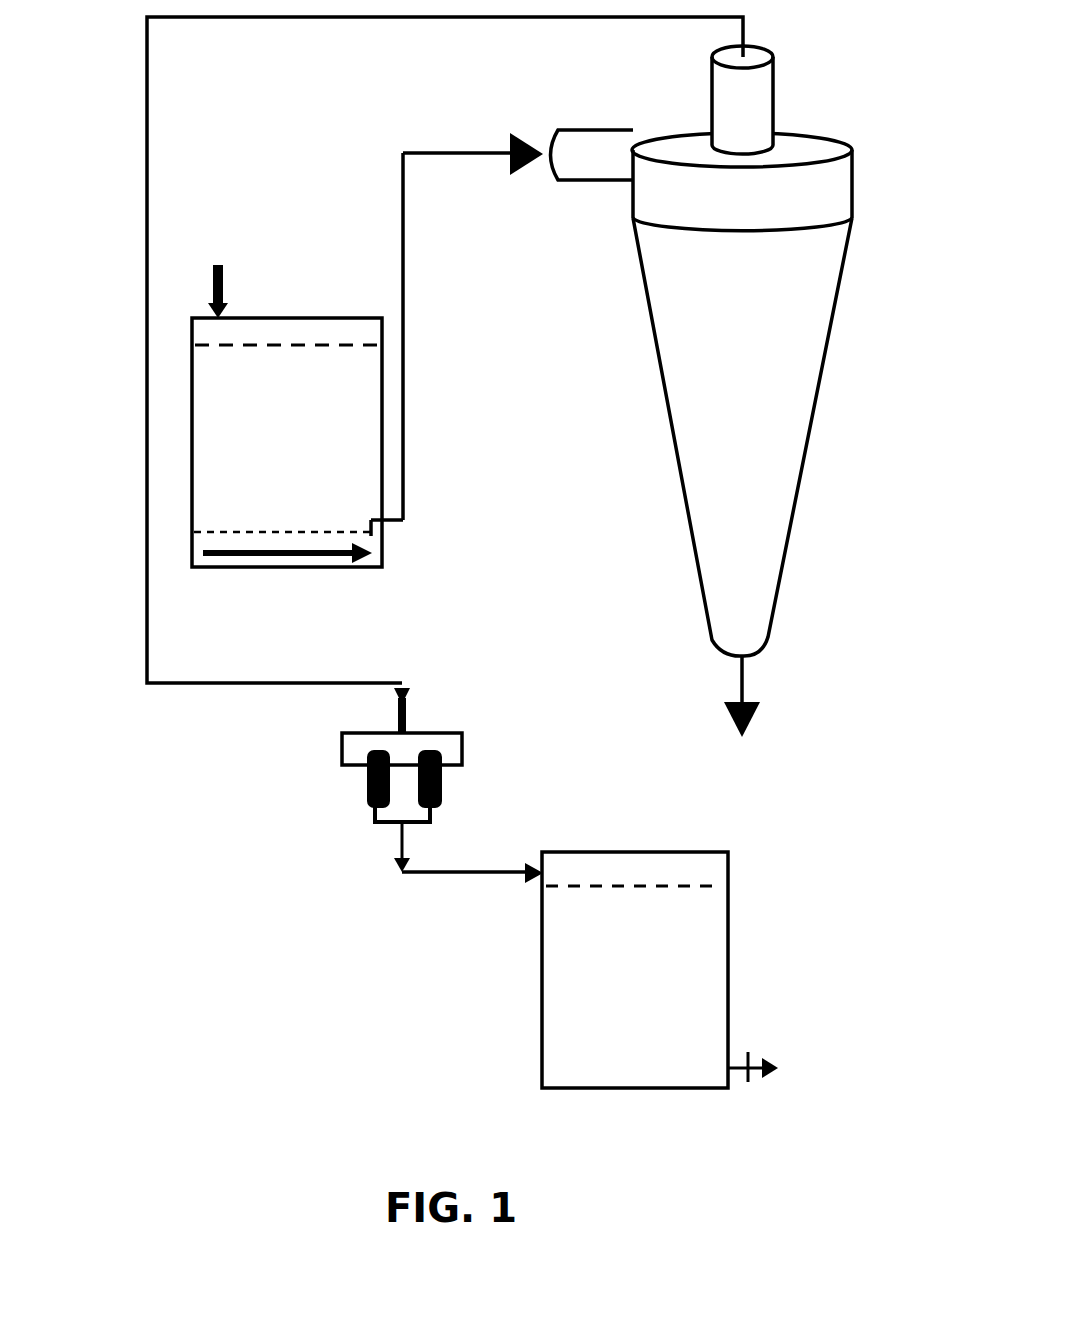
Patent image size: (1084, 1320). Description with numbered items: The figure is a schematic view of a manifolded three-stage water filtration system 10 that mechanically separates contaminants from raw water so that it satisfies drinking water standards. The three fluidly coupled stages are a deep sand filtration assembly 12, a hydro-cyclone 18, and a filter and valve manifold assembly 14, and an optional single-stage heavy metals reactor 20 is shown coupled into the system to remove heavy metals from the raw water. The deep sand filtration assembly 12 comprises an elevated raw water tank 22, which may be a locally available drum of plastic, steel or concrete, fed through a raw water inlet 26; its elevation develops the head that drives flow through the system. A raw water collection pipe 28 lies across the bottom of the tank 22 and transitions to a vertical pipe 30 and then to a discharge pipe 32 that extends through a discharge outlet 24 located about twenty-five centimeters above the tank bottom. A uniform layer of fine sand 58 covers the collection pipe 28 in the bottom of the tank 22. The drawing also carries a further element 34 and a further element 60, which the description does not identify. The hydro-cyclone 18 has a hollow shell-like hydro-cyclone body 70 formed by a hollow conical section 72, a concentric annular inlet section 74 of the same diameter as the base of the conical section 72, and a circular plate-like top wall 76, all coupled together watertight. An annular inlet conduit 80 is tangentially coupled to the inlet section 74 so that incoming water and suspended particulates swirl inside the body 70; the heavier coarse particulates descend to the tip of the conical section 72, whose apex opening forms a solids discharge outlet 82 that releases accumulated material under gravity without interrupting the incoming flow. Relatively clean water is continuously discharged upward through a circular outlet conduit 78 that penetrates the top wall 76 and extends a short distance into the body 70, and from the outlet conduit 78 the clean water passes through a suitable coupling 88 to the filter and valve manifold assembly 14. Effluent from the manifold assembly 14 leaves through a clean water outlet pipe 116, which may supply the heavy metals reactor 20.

The manifolded three-stage water filtration system 10 is at (79, 878).
The deep sand filtration assembly 12 is at (282, 394).
The filter and valve manifold assembly 14 is at (515, 726).
The hydro-cyclone 18 is at (757, 391).
The single-stage heavy metals reactor 20 is at (722, 857).
The raw water tank 22 is at (192, 420).
The discharge outlet 24 is at (383, 527).
The raw water inlet 26 is at (224, 283).
The raw water collection pipe 28 is at (253, 557).
The vertical pipe 30 is at (363, 530).
The discharge pipe 32 is at (383, 523).
The transfer pipe 34 is at (403, 362).
The fine sand 58 is at (213, 530).
The upper liquid level 60 is at (330, 343).
The hydro-cyclone body 70 is at (665, 243).
The conical section 72 is at (795, 438).
The inlet section 74 is at (778, 164).
The top wall 76 is at (805, 148).
The outlet conduit 78 is at (777, 95).
The inlet conduit 80 is at (590, 180).
The solids discharge outlet 82 is at (748, 655).
The coupling 88 is at (147, 318).
The clean water outlet pipe 116 is at (395, 838).